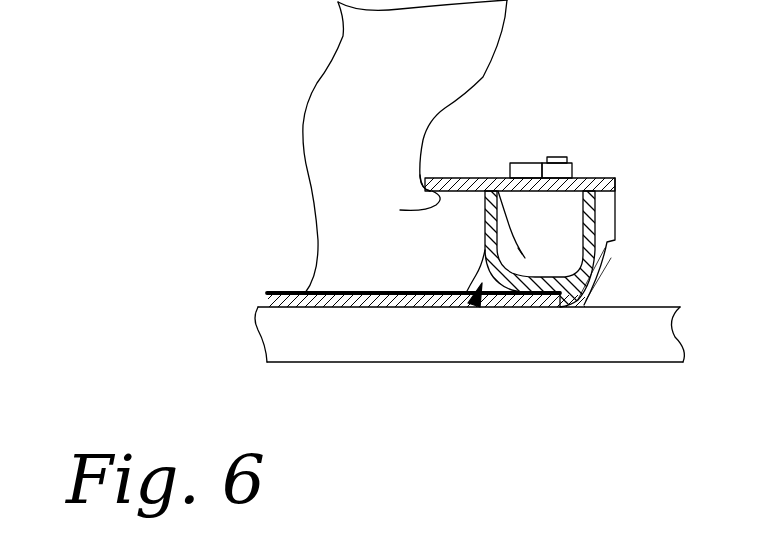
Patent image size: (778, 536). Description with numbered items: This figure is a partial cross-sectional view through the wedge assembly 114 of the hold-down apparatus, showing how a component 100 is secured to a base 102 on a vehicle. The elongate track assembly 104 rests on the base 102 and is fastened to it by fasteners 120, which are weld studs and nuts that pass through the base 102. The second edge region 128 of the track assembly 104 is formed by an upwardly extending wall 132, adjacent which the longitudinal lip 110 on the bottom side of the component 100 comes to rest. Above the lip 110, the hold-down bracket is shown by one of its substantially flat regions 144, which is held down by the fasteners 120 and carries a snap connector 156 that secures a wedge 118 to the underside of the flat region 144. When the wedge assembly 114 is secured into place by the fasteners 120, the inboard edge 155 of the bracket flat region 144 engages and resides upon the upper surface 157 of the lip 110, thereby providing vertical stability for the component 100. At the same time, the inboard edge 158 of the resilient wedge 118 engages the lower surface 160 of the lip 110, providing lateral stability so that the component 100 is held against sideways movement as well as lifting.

The component 100 is at (350, 53).
The base 102 is at (377, 350).
The track assembly 104 is at (354, 296).
The second longitudinal lip 110 is at (485, 243).
The wedge assembly 114 is at (475, 304).
The wedge 118 is at (583, 226).
The fasteners 120 is at (555, 157).
The second edge region 128 is at (615, 232).
The upwardly extending wall 132 is at (610, 274).
The flat region of hold-down bracket 144 is at (587, 177).
The inboard edge of hold-down bracket 155 is at (420, 185).
The snap connector 156 is at (520, 163).
The upper surface of lip 157 is at (399, 205).
The inboard edge of wedge 158 is at (521, 249).
The lower surface of lip 160 is at (485, 218).